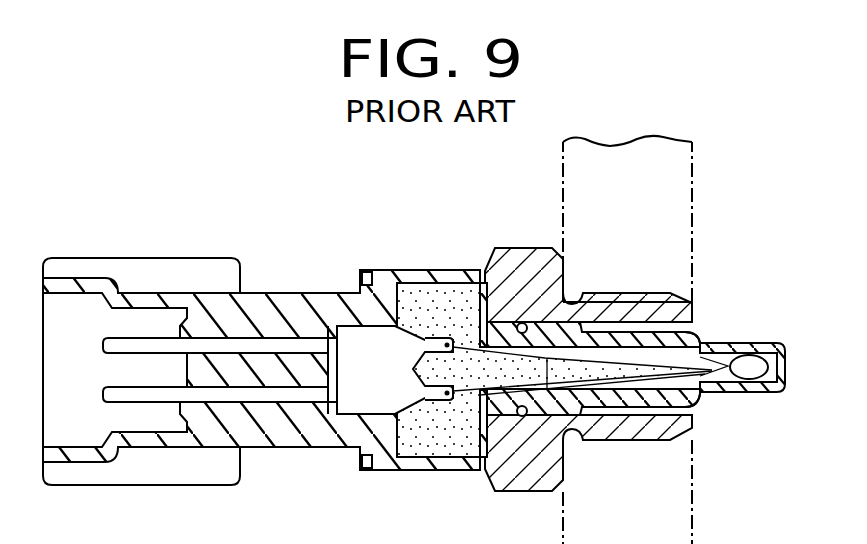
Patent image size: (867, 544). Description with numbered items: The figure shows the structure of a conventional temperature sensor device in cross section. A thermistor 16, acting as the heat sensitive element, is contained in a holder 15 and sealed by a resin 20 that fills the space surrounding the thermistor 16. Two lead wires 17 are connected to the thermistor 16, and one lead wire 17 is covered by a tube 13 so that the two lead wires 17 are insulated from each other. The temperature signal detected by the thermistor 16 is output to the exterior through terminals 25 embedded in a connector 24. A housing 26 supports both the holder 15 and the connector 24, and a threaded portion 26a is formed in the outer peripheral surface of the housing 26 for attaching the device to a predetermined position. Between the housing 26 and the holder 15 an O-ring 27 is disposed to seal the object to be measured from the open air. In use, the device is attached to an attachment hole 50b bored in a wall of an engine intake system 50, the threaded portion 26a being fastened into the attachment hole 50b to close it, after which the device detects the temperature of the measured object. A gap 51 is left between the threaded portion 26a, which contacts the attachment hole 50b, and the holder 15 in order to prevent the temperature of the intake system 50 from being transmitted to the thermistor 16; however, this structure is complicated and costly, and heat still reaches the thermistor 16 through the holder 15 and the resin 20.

The tube 13 is at (700, 360).
The holder 15 is at (760, 343).
The thermistor 16 is at (752, 372).
The lead wire 17 is at (633, 380).
The resin 20 is at (660, 387).
The connector 24 is at (75, 470).
The terminals 25 is at (130, 348).
The housing 26 is at (575, 440).
The threaded portion 26a is at (613, 442).
The O-ring 27 is at (522, 417).
The engine intake system 50 is at (563, 205).
The attachment hole 50b is at (697, 298).
The gap 51 is at (688, 330).